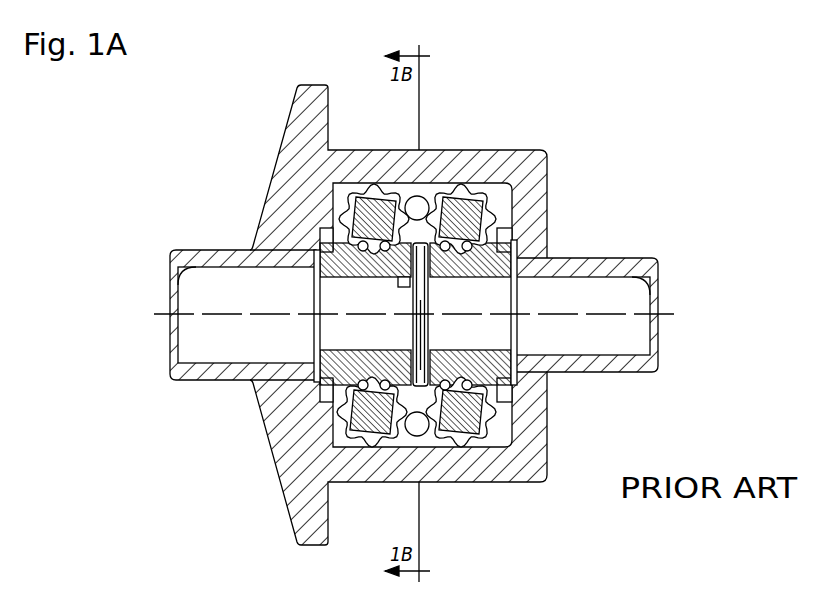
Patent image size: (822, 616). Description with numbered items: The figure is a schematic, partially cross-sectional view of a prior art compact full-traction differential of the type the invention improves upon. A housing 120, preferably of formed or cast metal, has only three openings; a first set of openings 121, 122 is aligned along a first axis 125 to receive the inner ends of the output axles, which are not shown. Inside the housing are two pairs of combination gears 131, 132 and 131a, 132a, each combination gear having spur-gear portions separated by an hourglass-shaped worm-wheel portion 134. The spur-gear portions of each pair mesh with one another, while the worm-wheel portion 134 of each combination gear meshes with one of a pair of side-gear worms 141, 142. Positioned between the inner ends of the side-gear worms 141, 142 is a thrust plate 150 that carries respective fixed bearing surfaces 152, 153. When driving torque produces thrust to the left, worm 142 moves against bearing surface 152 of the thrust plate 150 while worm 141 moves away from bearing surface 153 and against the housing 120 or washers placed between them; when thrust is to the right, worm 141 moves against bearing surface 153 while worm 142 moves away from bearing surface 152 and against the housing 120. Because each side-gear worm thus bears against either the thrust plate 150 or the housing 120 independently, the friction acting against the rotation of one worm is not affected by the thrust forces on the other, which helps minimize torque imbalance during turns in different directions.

The housing 120 is at (278, 186).
The opening 121 is at (176, 290).
The opening 122 is at (661, 291).
The first axis 125 is at (666, 316).
The combination gear 131 is at (360, 208).
The combination gear 132 is at (446, 185).
The combination gear 131a is at (345, 422).
The combination gear 132a is at (437, 420).
The worm-wheel portion 134 is at (358, 200).
The side-gear worm 141 is at (333, 279).
The side-gear worm 142 is at (510, 280).
The thrust plate 150 is at (422, 307).
The bearing surface 152 is at (428, 350).
The bearing surface 153 is at (399, 280).